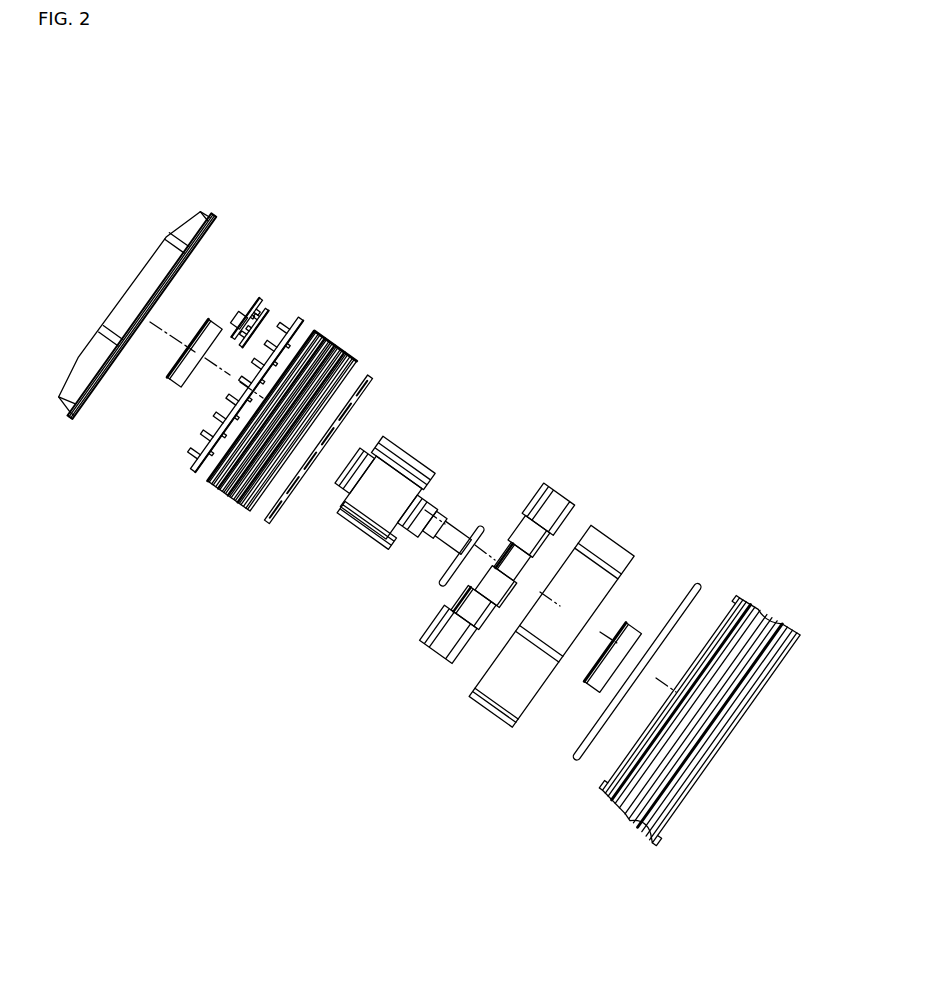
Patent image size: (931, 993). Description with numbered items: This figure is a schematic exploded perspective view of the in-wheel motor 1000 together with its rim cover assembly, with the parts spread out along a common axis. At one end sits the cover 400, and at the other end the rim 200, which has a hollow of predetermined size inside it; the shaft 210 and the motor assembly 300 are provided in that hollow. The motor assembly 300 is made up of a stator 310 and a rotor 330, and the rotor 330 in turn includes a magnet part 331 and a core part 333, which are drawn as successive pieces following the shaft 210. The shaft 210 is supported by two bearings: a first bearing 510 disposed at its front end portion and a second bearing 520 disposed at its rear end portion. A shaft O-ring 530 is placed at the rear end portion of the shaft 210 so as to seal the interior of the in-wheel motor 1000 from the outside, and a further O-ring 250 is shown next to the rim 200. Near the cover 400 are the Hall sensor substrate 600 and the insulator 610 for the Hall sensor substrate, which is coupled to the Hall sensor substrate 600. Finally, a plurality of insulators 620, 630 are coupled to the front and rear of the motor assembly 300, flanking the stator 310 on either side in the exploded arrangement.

The in-wheel motor 1000 is at (163, 100).
The cover 400 is at (200, 213).
The first bearing 510 is at (168, 378).
The Hall sensor substrate 600 is at (258, 300).
The insulator for Hall sensor substrate 610 is at (267, 309).
The insulator 620 is at (193, 462).
The stator 310 is at (342, 353).
The insulator 630 is at (273, 518).
The shaft 210 is at (352, 522).
The shaft O-ring 530 is at (443, 581).
The motor assembly 300 is at (680, 410).
The rotor 330 is at (668, 463).
The magnet part 331 is at (548, 487).
The core part 333 is at (605, 543).
The second bearing 520 is at (588, 683).
The O-ring 250 is at (569, 765).
The rim 200 is at (765, 637).